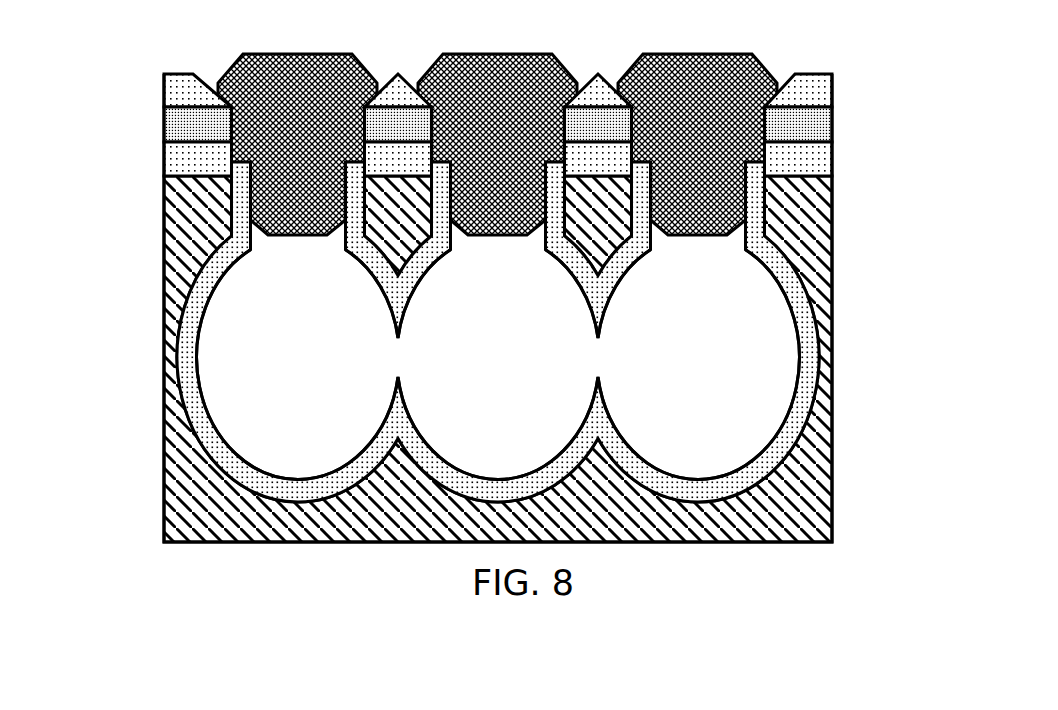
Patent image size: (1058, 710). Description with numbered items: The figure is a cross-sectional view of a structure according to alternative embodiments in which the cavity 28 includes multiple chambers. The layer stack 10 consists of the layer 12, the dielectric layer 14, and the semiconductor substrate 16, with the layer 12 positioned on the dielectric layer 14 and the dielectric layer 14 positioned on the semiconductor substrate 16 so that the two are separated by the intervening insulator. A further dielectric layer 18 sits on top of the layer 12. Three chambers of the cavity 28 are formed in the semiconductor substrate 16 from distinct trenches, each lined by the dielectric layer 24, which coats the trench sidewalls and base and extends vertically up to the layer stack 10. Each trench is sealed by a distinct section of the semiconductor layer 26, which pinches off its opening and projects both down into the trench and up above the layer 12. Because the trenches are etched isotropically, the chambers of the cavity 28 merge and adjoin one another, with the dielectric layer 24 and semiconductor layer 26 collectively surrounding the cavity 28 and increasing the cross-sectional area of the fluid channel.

The layer stack 10 is at (148, 146).
The layer 12 is at (805, 122).
The dielectric layer 14 is at (805, 164).
The semiconductor substrate 16 is at (808, 473).
The dielectric layer 18 is at (805, 88).
The dielectric layer 24 is at (793, 290).
The semiconductor layer 26 is at (277, 82).
The cavity 28 is at (508, 357).